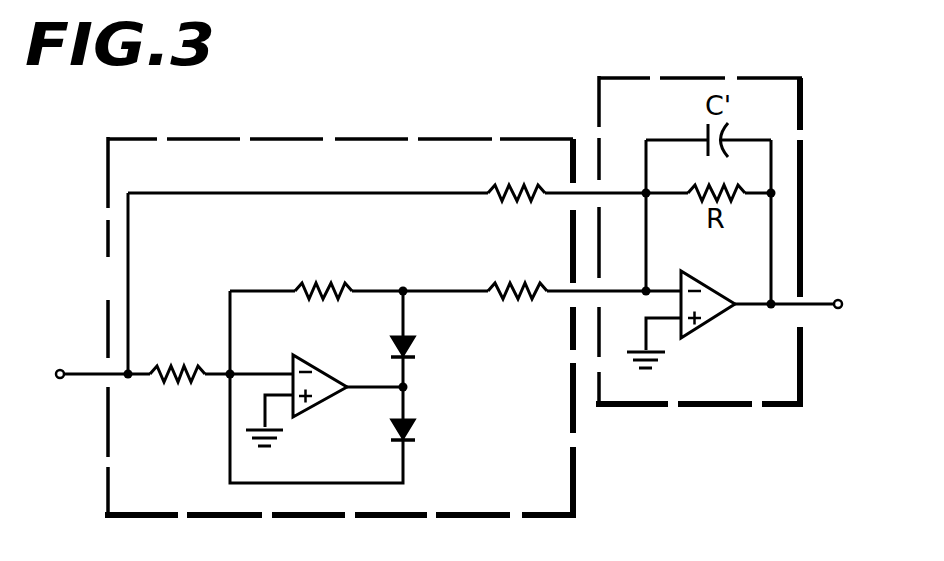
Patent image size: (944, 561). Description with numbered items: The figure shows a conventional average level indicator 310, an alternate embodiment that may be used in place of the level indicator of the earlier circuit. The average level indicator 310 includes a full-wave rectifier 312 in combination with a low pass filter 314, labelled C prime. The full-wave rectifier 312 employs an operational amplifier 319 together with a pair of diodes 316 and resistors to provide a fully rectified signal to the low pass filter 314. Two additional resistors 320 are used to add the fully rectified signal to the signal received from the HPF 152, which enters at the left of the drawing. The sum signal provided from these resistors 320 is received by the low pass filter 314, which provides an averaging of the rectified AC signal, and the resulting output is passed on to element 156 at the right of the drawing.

The average level indicator 310 is at (195, 108).
The full-wave rectifier 312 is at (300, 138).
The low pass filter 314 is at (695, 77).
The diodes 316 is at (415, 341).
The operational amplifier 319 is at (314, 417).
The resistors 320 is at (522, 204).
The HPF 152 is at (85, 411).
The output to element 156 is at (815, 314).